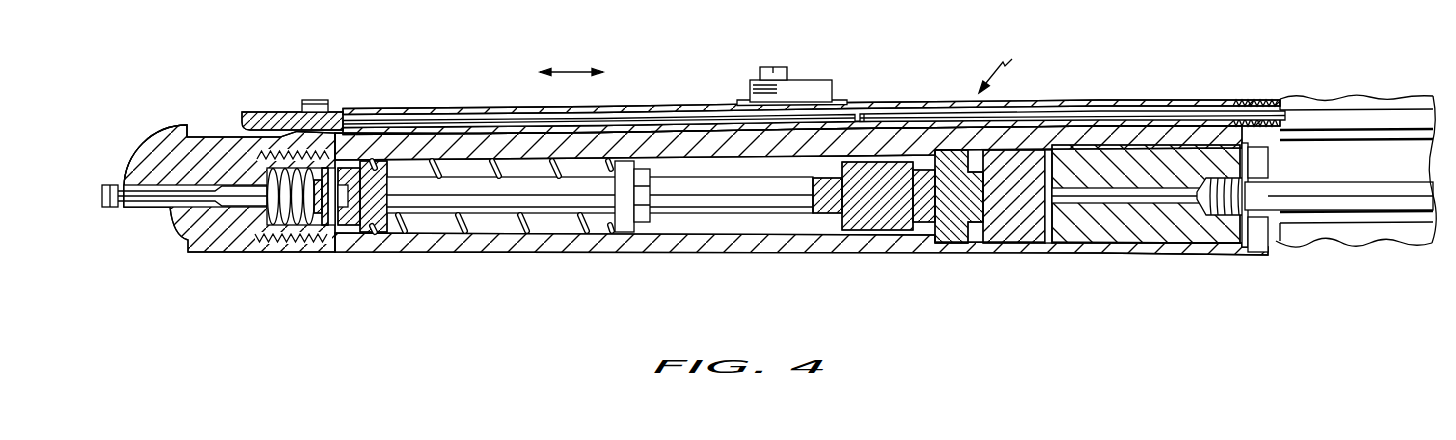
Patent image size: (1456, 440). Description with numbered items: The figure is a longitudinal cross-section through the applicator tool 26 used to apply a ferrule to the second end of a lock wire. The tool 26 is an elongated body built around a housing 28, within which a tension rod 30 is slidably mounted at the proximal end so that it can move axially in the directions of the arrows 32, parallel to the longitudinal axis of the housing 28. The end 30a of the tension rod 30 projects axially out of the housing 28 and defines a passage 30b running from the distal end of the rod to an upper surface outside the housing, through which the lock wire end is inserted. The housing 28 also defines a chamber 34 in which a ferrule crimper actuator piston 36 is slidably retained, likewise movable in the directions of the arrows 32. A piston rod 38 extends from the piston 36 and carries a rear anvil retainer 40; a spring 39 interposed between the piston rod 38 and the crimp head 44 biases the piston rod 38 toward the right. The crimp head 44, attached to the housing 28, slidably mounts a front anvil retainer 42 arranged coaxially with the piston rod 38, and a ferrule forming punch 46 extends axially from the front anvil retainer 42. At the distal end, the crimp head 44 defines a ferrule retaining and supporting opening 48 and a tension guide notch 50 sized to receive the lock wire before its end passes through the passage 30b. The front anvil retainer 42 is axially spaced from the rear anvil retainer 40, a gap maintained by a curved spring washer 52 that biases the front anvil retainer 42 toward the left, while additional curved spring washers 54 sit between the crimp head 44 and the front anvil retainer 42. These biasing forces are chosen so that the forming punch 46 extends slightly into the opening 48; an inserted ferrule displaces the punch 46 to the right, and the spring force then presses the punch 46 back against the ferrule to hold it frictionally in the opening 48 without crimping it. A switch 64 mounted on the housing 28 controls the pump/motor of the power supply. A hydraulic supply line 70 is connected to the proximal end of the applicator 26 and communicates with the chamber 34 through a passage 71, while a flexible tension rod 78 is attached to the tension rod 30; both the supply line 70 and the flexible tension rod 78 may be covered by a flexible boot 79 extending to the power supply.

The applicator tool 26 is at (1009, 67).
The housing 28 is at (895, 247).
The tension rod 30 is at (417, 120).
The end of tension rod 30a is at (282, 110).
The passage 30b is at (242, 122).
The arrows 32 is at (579, 71).
The chamber 34 is at (1050, 244).
The ferrule crimper actuator piston 36 is at (1012, 231).
The piston rod 38 is at (693, 203).
The spring 39 is at (477, 228).
The rear anvil retainer 40 is at (350, 228).
The front anvil retainer 42 is at (333, 222).
The crimp head 44 is at (200, 237).
The ferrule forming punch 46 is at (233, 190).
The ferrule retaining and supporting opening 48 is at (125, 207).
The tension guide notch 50 is at (153, 140).
The curved spring washer 52 is at (337, 227).
The additional curved spring washers 54 is at (263, 218).
The switch 64 is at (820, 85).
The hydraulic supply line 70 is at (1337, 210).
The passage 71 is at (1133, 203).
The flexible tension rod 78 is at (1165, 122).
The boot 79 is at (1360, 100).